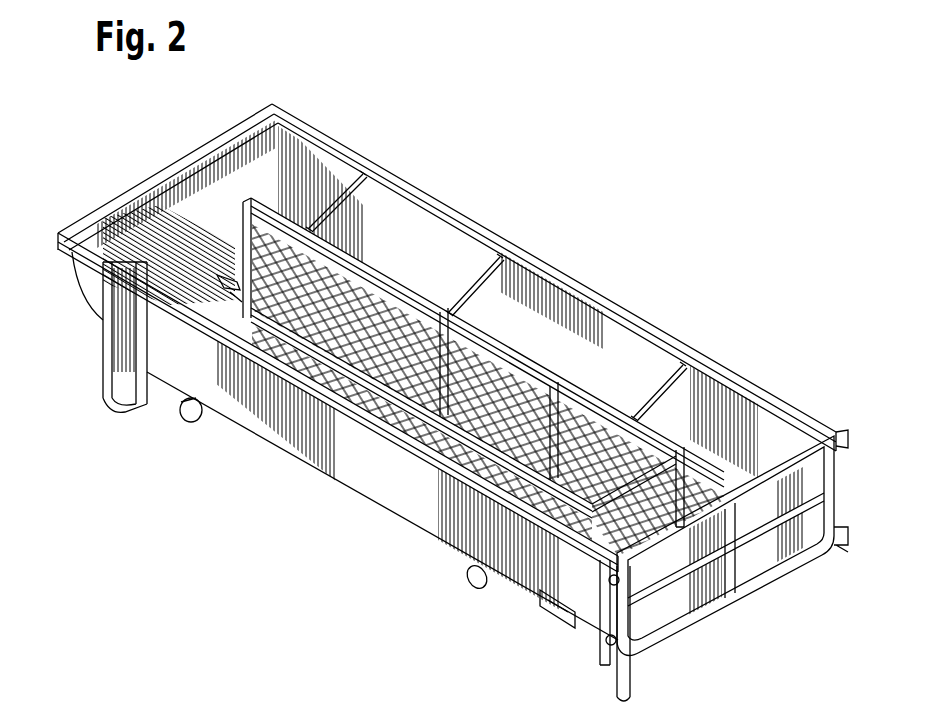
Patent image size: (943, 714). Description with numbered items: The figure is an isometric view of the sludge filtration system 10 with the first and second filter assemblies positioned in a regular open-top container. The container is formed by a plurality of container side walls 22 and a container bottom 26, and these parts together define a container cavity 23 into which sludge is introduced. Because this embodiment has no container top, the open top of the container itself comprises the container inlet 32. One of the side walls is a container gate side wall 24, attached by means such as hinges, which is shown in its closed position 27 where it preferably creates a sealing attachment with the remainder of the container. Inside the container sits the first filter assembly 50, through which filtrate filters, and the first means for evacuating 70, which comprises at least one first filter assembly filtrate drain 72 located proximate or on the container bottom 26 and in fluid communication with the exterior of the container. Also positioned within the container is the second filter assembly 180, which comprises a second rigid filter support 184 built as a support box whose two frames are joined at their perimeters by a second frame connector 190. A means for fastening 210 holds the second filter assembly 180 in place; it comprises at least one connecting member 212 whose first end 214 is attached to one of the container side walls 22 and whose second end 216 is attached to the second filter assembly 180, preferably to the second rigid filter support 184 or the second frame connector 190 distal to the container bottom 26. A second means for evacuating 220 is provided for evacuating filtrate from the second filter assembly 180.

The Sludge Filtration System 10 is at (640, 170).
The container side walls 22 is at (84, 300).
The container cavity 23 is at (177, 233).
The container gate side wall 24 is at (760, 598).
The container bottom 26 is at (443, 513).
The closed position 27 is at (828, 568).
The container inlet 32 is at (662, 276).
The first filter assembly 50 is at (752, 523).
The first means for evacuating 70 is at (130, 470).
The first filter assembly filtrate drain 72 is at (180, 412).
The second filter assembly 180 is at (449, 306).
The second rigid filter support 184 is at (424, 268).
The second frame connector 190 is at (410, 272).
The means for fastening 210 is at (379, 147).
The connecting member 212 is at (338, 168).
The first end 214 is at (330, 173).
The second end 216 is at (389, 258).
The second means for evacuating 220 is at (210, 246).